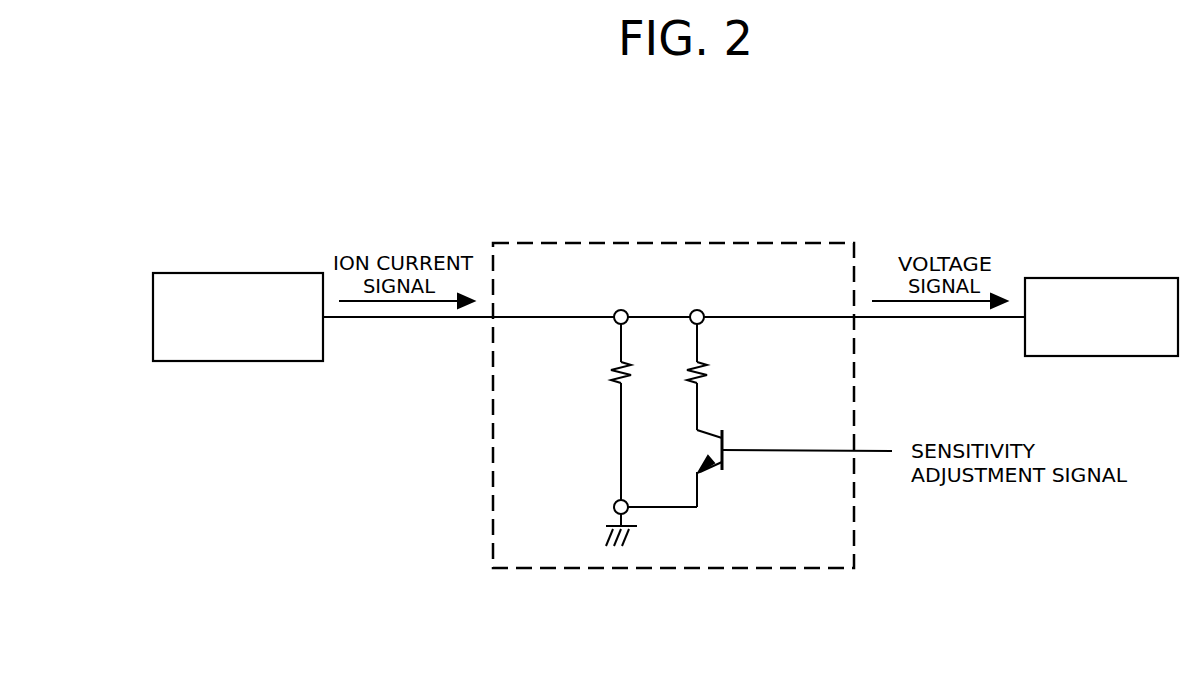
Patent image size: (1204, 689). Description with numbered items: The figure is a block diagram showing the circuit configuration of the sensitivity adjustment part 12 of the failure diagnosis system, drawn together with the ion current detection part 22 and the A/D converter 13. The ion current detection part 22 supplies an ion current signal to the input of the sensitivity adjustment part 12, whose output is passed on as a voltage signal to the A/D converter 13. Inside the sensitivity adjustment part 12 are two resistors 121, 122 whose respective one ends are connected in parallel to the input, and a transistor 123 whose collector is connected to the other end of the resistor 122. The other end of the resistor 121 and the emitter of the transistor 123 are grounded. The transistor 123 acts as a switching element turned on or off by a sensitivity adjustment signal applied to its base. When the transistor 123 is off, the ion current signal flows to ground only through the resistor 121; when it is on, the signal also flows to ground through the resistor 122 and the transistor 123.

The ion current detection part 22 is at (233, 273).
The sensitivity adjustment part 12 is at (693, 242).
The A/D converter 13 is at (1101, 278).
The resistor 121 is at (618, 385).
The resistor 122 is at (705, 379).
The transistor 123 is at (723, 467).